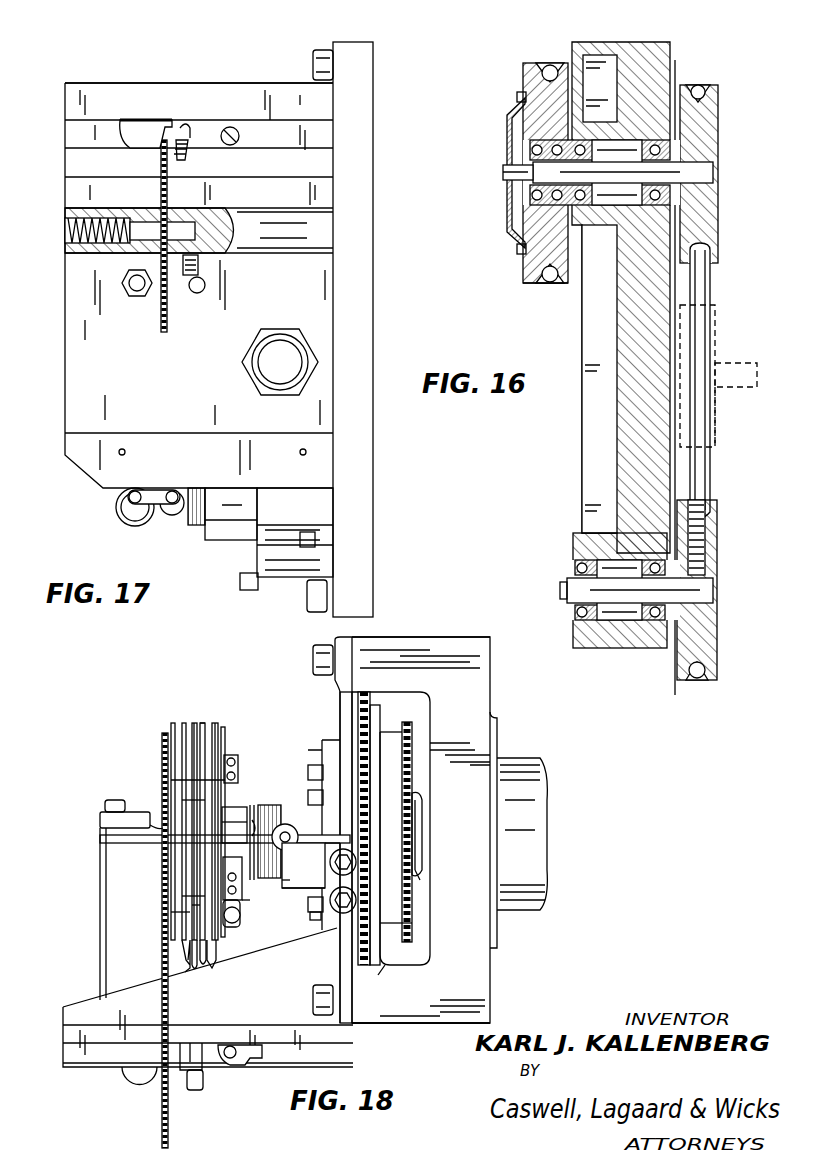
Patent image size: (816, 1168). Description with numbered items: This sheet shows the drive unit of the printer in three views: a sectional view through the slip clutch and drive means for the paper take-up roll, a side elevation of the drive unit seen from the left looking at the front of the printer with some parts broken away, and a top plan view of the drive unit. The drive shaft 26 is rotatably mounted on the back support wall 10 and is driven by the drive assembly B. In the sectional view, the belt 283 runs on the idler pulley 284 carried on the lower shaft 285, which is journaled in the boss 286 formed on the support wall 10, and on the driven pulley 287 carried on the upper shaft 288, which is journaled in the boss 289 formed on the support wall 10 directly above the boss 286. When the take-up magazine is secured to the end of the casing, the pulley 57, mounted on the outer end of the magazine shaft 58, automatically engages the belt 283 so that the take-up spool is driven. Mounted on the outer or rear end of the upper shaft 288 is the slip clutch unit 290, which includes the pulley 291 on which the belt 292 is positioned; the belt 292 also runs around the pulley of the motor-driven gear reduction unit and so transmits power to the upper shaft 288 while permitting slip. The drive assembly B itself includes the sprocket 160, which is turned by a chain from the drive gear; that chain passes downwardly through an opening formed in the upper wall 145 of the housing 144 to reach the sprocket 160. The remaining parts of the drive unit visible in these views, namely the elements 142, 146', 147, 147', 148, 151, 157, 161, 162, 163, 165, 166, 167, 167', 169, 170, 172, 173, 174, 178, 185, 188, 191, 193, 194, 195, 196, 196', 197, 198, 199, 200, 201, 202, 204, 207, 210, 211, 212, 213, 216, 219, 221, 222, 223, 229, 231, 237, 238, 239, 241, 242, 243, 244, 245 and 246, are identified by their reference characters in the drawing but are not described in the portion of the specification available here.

In FIG. 16, the back support wall 10 is at (600, 455).
In FIG. 18, the drive shaft 26 is at (420, 825).
In FIG. 16, the pulley 57 is at (716, 420).
In FIG. 16, the shaft 58 is at (748, 362).
In FIG. 18, the cylinder 142 is at (548, 906).
In FIG. 18, the housing 144 is at (440, 637).
In FIG. 18, the upper wall 145 is at (468, 983).
In FIG. 17, the plate 146' is at (199, 65).
In FIG. 18, the plate 146' is at (208, 1013).
In FIG. 18, the housing wall 147 is at (421, 1038).
In FIG. 17, the bolt 147' is at (305, 334).
In FIG. 18, the bolt 147' is at (304, 830).
In FIG. 18, the housing top 148 is at (405, 637).
In FIG. 18, the pawl 151 is at (425, 800).
In FIG. 18, the plate 157 is at (388, 712).
In FIG. 18, the sprocket 160 is at (412, 923).
In FIG. 18, the wall 161 is at (386, 968).
In FIG. 18, the plate 162 is at (376, 745).
In FIG. 18, the chain 163 is at (362, 735).
In FIG. 18, the plate 165 is at (340, 708).
In FIG. 17, the base plate 166 is at (183, 470).
In FIG. 18, the base plate 166 is at (200, 1000).
In FIG. 18, the block 167 is at (285, 896).
In FIG. 18, the bolt 167' is at (305, 858).
In FIG. 18, the bracket 169 is at (262, 883).
In FIG. 18, the screw 170 is at (244, 896).
In FIG. 18, the spring block 172 is at (272, 805).
In FIG. 18, the arm 173 is at (248, 800).
In FIG. 18, the arm 174 is at (245, 805).
In FIG. 18, the bracket 178 is at (243, 750).
In FIG. 18, the collar 185 is at (160, 825).
In FIG. 17, the shaft 188 is at (114, 510).
In FIG. 18, the shaft 188 is at (130, 848).
In FIG. 18, the frame 191 is at (110, 948).
In FIG. 18, the bracket 193 is at (100, 818).
In FIG. 18, the block 194 is at (300, 845).
In FIG. 18, the shaft end 195 is at (348, 835).
In FIG. 17, the block 196 is at (181, 527).
In FIG. 17, the block 196' is at (227, 537).
In FIG. 17, the roller link 197 is at (150, 508).
In FIG. 18, the wheel 198 is at (287, 824).
In FIG. 18, the block bottom 199 is at (306, 888).
In FIG. 18, the lever 200 is at (352, 820).
In FIG. 18, the frame wall 201 is at (100, 838).
In FIG. 18, the bar 202 is at (214, 720).
In FIG. 18, the bar top 204 is at (207, 723).
In FIG. 18, the bar 207 is at (196, 910).
In FIG. 18, the bar 210 is at (205, 770).
In FIG. 18, the cylinder 211 is at (243, 905).
In FIG. 18, the bar 212 is at (203, 725).
In FIG. 18, the bar 213 is at (200, 896).
In FIG. 18, the strip 216 is at (224, 740).
In FIG. 18, the bar 219 is at (225, 772).
In FIG. 18, the roller 221 is at (232, 928).
In FIG. 18, the bar 222 is at (194, 730).
In FIG. 18, the bar 223 is at (180, 920).
In FIG. 18, the bar 229 is at (184, 735).
In FIG. 18, the bar 231 is at (170, 740).
In FIG. 18, the fork 237 is at (183, 962).
In FIG. 18, the fork 238 is at (194, 970).
In FIG. 18, the fork 239 is at (203, 968).
In FIG. 18, the fork 241 is at (213, 966).
In FIG. 17, the toothed rod 242 is at (167, 322).
In FIG. 18, the toothed rod 242 is at (170, 1110).
In FIG. 17, the spring 243 is at (110, 253).
In FIG. 17, the latch 244 is at (135, 142).
In FIG. 18, the latch 244 is at (185, 1032).
In FIG. 17, the screw 245 is at (240, 136).
In FIG. 18, the screw 245 is at (240, 1062).
In FIG. 17, the spring 246 is at (190, 158).
In FIG. 18, the spring 246 is at (205, 1080).
In FIG. 16, the belt 283 is at (710, 288).
In FIG. 16, the idler pulley 284 is at (710, 545).
In FIG. 16, the lower shaft 285 is at (713, 588).
In FIG. 16, the boss 286 is at (630, 632).
In FIG. 16, the driven pulley 287 is at (718, 135).
In FIG. 16, the upper shaft 288 is at (715, 172).
In FIG. 16, the boss 289 is at (600, 220).
In FIG. 16, the slip clutch unit 290 is at (505, 247).
In FIG. 16, the pulley 291 is at (527, 284).
In FIG. 16, the belt 292 is at (550, 62).